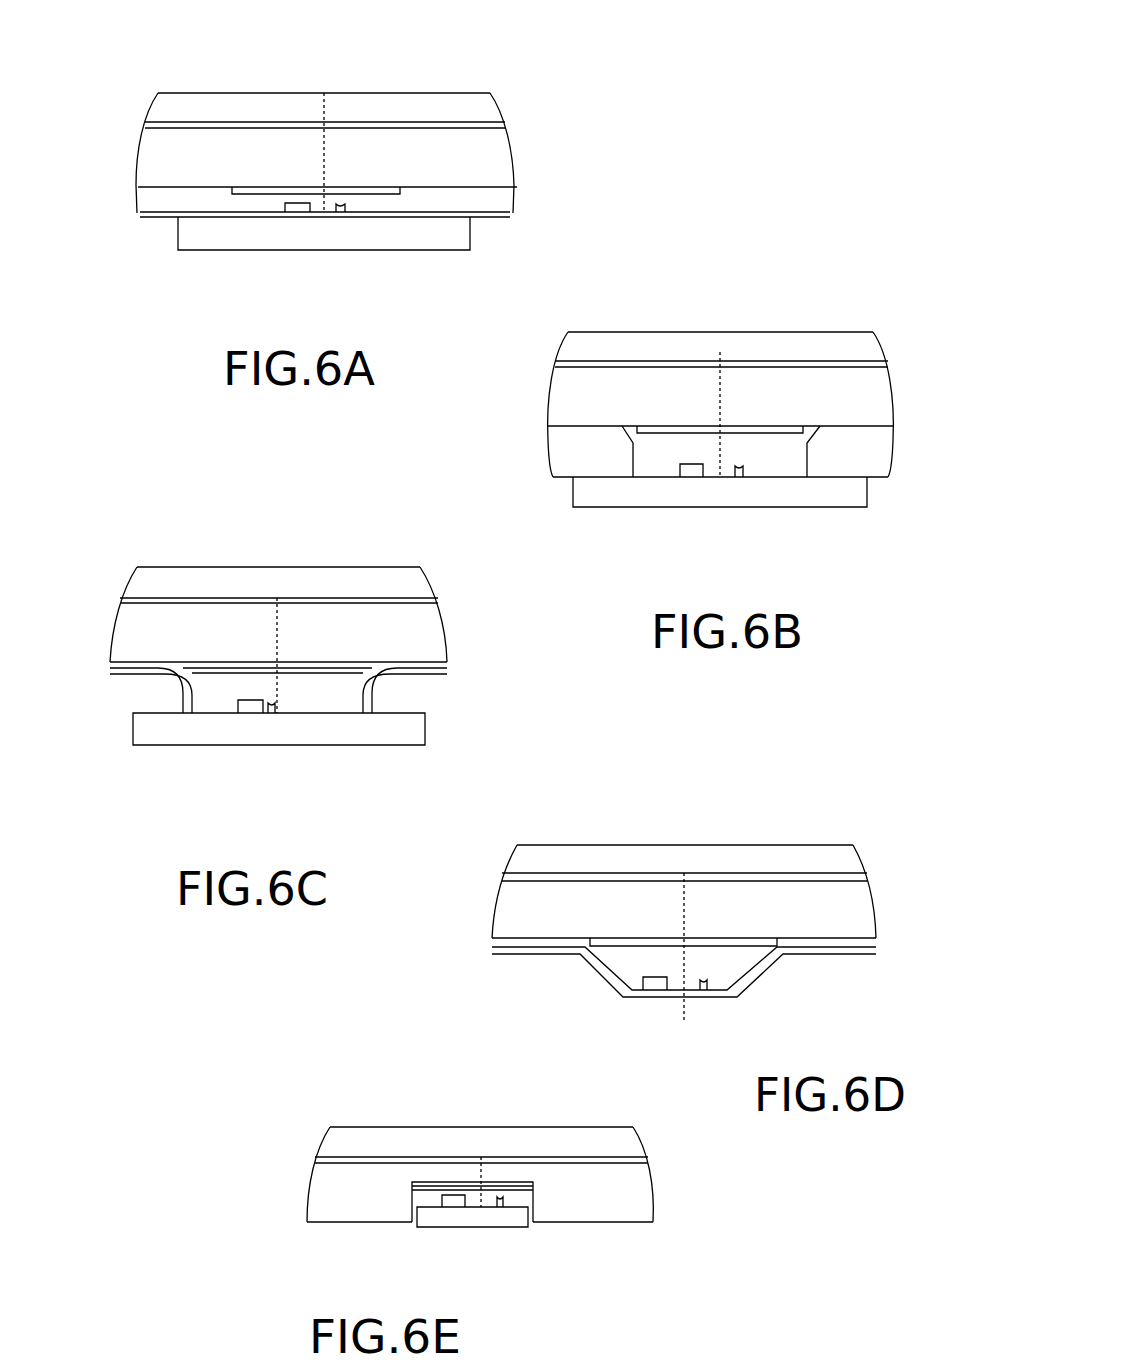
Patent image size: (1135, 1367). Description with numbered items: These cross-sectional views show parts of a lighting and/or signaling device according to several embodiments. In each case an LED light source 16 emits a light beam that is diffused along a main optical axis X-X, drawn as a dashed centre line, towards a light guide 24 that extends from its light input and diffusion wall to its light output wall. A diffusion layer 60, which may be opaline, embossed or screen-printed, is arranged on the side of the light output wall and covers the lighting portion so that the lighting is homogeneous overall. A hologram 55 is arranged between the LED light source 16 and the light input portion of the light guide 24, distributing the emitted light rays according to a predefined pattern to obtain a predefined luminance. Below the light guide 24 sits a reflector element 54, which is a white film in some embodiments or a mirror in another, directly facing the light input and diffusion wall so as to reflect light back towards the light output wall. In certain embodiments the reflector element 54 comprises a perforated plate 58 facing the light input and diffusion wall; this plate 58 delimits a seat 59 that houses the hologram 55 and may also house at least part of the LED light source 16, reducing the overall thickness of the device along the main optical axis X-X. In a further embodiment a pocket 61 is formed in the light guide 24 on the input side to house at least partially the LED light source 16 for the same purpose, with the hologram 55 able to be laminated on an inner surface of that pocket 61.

In FIG. 6A, the LED light source 16 is at (300, 218).
In FIG. 6B, the LED light source 16 is at (742, 480).
In FIG. 6C, the LED light source 16 is at (245, 712).
In FIG. 6D, the LED light source 16 is at (633, 990).
In FIG. 6E, the LED light source 16 is at (500, 1215).
In FIG. 6A, the light guide 24 is at (170, 153).
In FIG. 6B, the light guide 24 is at (875, 410).
In FIG. 6C, the light guide 24 is at (162, 628).
In FIG. 6D, the light guide 24 is at (523, 910).
In FIG. 6E, the light guide 24 is at (622, 1203).
In FIG. 6A, the reflector element 54 is at (452, 207).
In FIG. 6B, the reflector element 54 is at (590, 424).
In FIG. 6C, the reflector element 54 is at (279, 729).
In FIG. 6D, the reflector element 54 is at (823, 945).
In FIG. 6E, the reflector element 54 is at (472, 1217).
In FIG. 6A, the hologram 55 is at (385, 187).
In FIG. 6B, the hologram 55 is at (740, 426).
In FIG. 6C, the hologram 55 is at (336, 676).
In FIG. 6D, the hologram 55 is at (724, 948).
In FIG. 6E, the hologram 55 is at (535, 1185).
In FIG. 6B, the plate 58 is at (843, 447).
In FIG. 6C, the plate 58 is at (148, 678).
In FIG. 6B, the seat 59 is at (660, 455).
In FIG. 6C, the seat 59 is at (214, 700).
In FIG. 6A, the diffusion layer 60 is at (245, 110).
In FIG. 6B, the diffusion layer 60 is at (632, 350).
In FIG. 6C, the diffusion layer 60 is at (335, 585).
In FIG. 6D, the diffusion layer 60 is at (768, 858).
In FIG. 6E, the diffusion layer 60 is at (570, 1143).
In FIG. 6E, the pocket 61 is at (427, 1196).
In FIG. 6A, the main optical axis X is at (325, 115).
In FIG. 6B, the main optical axis X is at (720, 478).
In FIG. 6C, the main optical axis X is at (277, 592).
In FIG. 6D, the main optical axis X is at (683, 870).
In FIG. 6E, the main optical axis X is at (480, 1152).